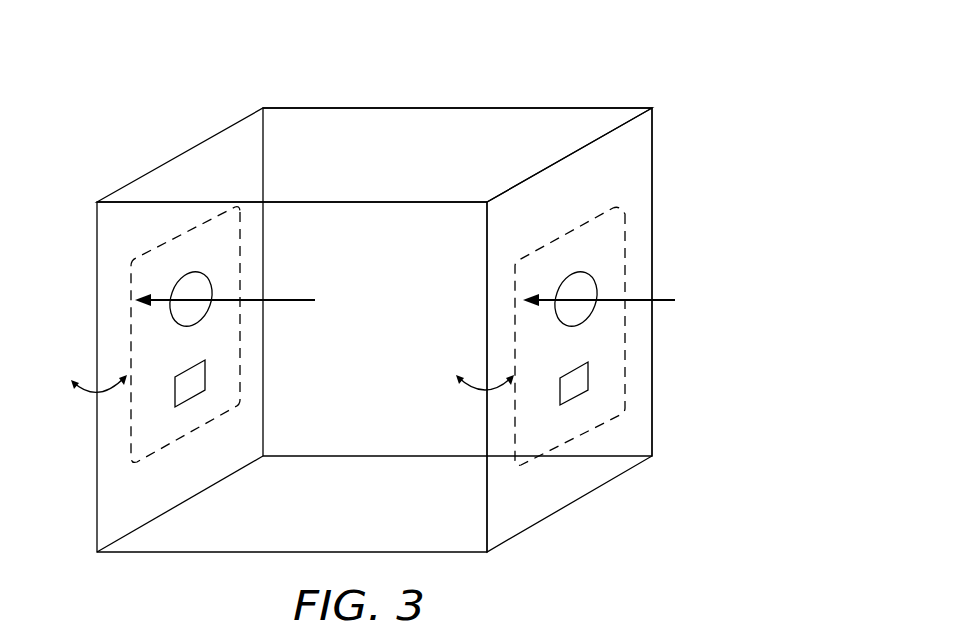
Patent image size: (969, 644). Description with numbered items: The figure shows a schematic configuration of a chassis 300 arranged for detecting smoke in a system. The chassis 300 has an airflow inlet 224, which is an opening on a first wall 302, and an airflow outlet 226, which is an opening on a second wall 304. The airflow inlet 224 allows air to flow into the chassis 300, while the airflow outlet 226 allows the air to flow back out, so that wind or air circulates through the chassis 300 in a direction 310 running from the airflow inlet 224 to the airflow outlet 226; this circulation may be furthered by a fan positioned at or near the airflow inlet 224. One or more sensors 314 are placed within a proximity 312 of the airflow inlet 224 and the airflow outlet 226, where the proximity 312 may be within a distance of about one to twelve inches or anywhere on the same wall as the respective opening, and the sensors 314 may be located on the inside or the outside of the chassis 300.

The chassis 300 is at (417, 279).
The first wall 302 is at (603, 142).
The second wall 304 is at (203, 142).
The proximity 312 is at (182, 230).
The airflow outlet 226 is at (180, 277).
The airflow inlet 224 is at (600, 278).
The direction 310 is at (280, 300).
The sensors 314 is at (205, 377).